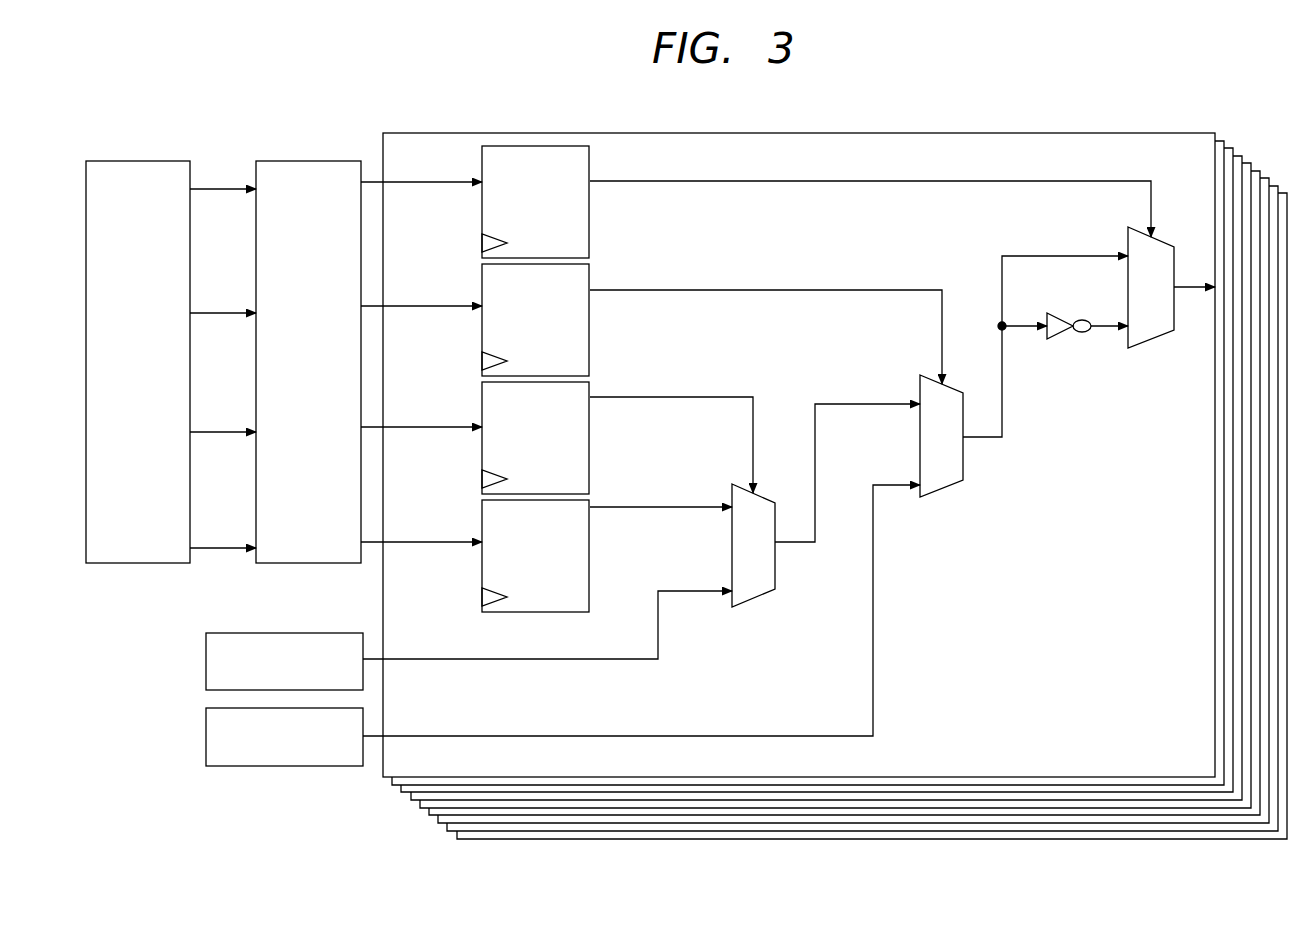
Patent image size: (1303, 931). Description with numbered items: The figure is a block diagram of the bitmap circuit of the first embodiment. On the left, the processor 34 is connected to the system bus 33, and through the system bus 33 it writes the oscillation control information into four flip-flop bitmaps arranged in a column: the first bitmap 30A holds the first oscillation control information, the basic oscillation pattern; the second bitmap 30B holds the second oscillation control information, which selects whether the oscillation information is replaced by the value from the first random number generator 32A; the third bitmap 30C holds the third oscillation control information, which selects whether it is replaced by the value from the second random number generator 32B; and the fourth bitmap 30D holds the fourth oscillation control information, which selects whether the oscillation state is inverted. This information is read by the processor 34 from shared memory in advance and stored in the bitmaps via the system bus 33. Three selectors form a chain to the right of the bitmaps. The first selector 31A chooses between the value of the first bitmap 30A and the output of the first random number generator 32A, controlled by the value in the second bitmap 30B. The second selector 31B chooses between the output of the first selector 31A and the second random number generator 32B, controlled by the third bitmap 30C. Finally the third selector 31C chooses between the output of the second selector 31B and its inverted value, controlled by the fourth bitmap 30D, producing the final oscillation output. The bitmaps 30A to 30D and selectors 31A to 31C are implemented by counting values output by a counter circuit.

The processor 34 is at (100, 160).
The system bus 33 is at (258, 160).
The bitmap 1 30A is at (590, 534).
The bitmap 2 30B is at (590, 429).
The bitmap 3 30C is at (590, 313).
The bitmap 4 30D is at (590, 212).
The selector 1 31A is at (750, 597).
The selector 2 31B is at (942, 490).
The selector 3 31C is at (1152, 343).
The random number generator 1 32A is at (212, 634).
The random number generator 2 32B is at (298, 767).